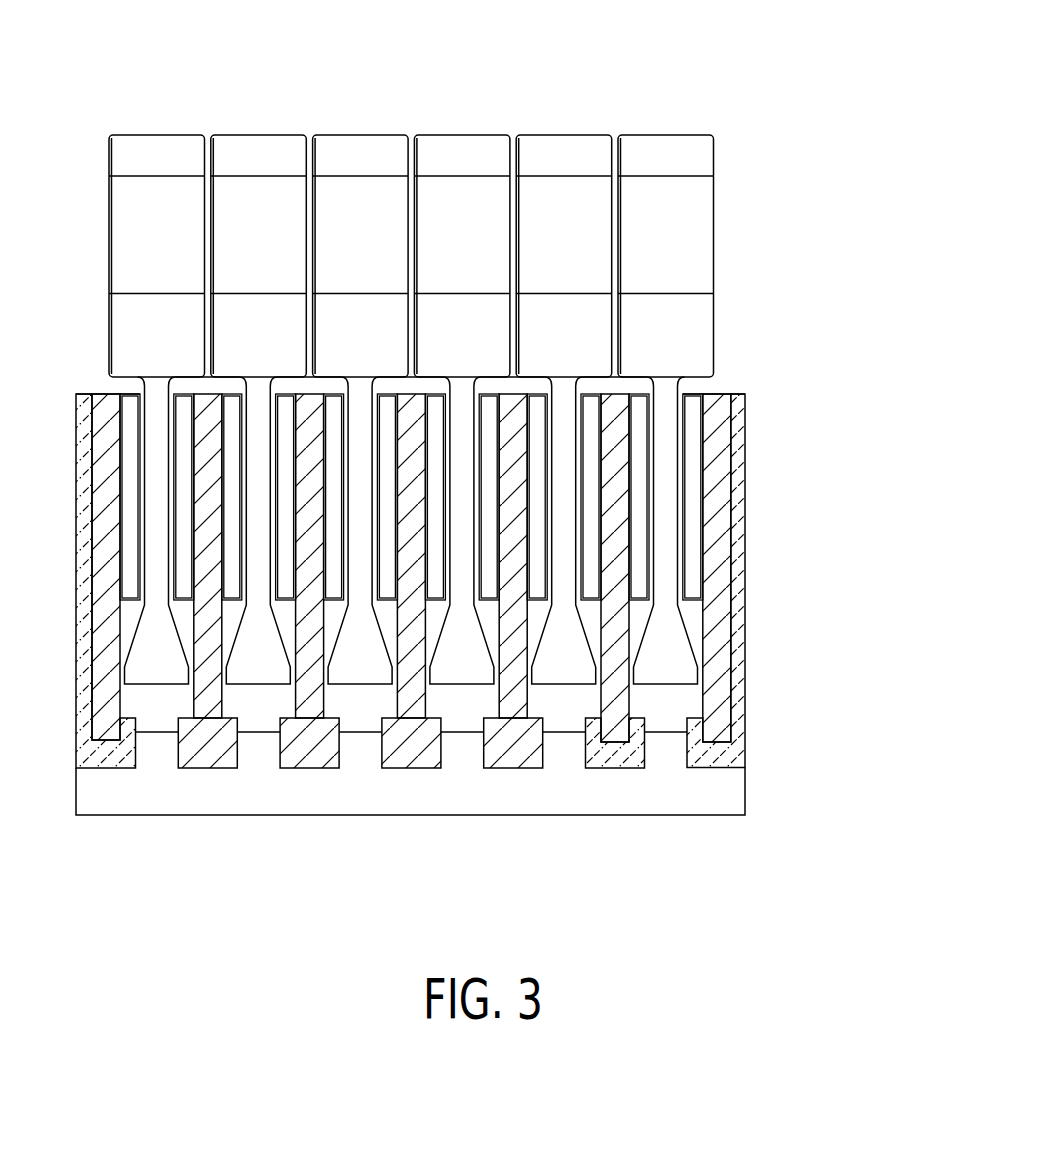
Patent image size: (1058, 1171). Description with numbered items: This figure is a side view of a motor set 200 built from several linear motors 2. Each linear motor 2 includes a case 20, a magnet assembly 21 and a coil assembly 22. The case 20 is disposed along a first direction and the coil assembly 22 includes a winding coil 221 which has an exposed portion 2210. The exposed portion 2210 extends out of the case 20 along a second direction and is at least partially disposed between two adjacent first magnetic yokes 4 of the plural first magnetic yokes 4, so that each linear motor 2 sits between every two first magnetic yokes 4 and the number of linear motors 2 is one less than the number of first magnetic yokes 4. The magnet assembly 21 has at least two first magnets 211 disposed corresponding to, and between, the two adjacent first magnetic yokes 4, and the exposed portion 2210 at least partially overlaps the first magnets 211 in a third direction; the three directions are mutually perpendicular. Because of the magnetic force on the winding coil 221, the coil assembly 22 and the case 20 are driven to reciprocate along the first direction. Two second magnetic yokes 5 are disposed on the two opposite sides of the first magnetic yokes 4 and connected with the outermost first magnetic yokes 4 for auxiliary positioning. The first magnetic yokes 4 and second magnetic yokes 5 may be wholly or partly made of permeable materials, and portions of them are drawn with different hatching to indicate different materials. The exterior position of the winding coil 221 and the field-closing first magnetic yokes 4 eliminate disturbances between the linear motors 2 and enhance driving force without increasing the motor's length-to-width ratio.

The motor set 200 is at (770, 43).
The linear motor 2 is at (557, 117).
The case 20 is at (678, 338).
The coil assembly 22 is at (690, 385).
The winding coil 221 is at (258, 417).
The exposed portion 2210 is at (662, 528).
The first magnet 211 is at (692, 578).
The first magnetic yoke 4 is at (720, 635).
The second magnetic yoke 5 is at (735, 667).
The magnet assembly 21 is at (833, 712).